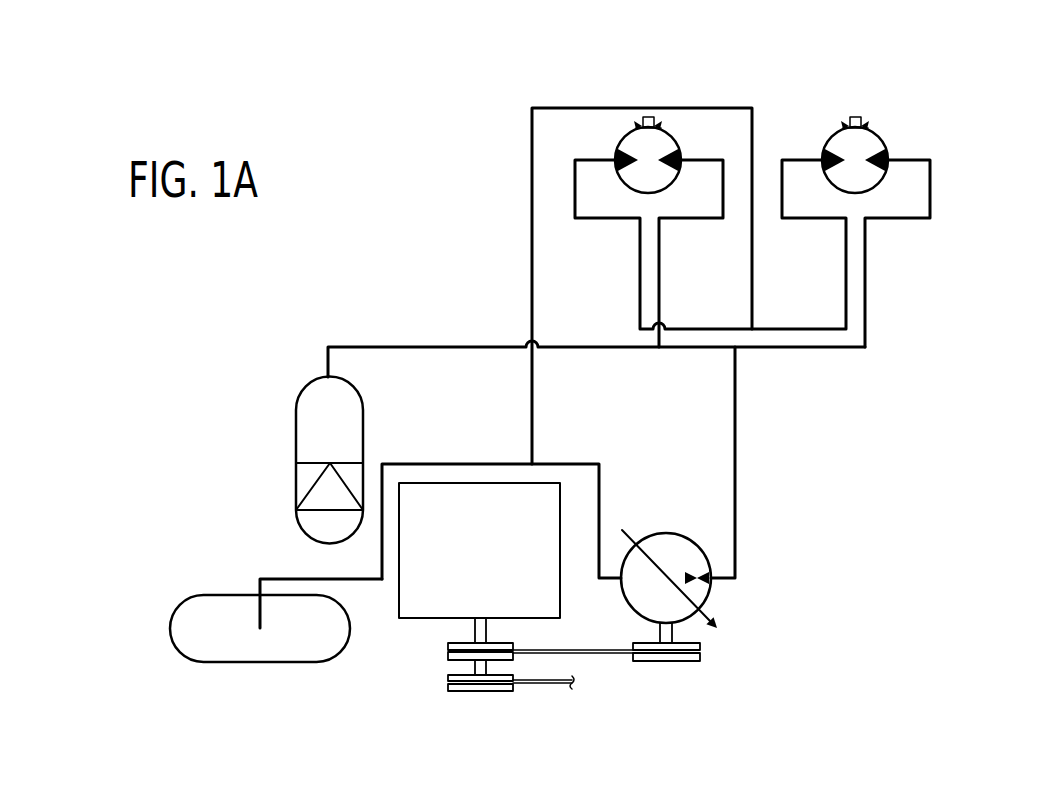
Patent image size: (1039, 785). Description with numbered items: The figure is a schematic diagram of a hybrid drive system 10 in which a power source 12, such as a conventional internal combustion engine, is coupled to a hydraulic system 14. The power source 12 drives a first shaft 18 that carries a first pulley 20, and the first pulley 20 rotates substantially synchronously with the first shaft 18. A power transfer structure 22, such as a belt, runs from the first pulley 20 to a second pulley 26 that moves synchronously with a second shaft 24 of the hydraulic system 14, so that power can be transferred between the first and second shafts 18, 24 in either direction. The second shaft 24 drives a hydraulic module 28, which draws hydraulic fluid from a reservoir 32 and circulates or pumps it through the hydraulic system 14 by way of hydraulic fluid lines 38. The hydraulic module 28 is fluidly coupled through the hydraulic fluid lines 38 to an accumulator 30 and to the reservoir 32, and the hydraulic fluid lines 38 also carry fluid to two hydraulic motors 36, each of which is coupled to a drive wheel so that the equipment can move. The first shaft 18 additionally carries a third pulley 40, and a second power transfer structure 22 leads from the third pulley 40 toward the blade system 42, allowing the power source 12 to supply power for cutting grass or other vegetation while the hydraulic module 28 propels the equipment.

The hybrid drive system 10 is at (968, 62).
The power source 12 is at (478, 483).
The hydraulic system 14 is at (290, 348).
The first shaft 18 is at (487, 666).
The first pulley 20 is at (452, 643).
The power transfer structure 22 is at (580, 650).
The second shaft 24 is at (672, 632).
The second pulley 26 is at (665, 662).
The hydraulic module 28 is at (697, 543).
The accumulator 30 is at (296, 484).
The reservoir 32 is at (262, 663).
The hydraulic motor 36 is at (625, 136).
The hydraulic fluid lines 38 is at (548, 108).
The third pulley 40 is at (478, 692).
The blade system 42 is at (583, 683).